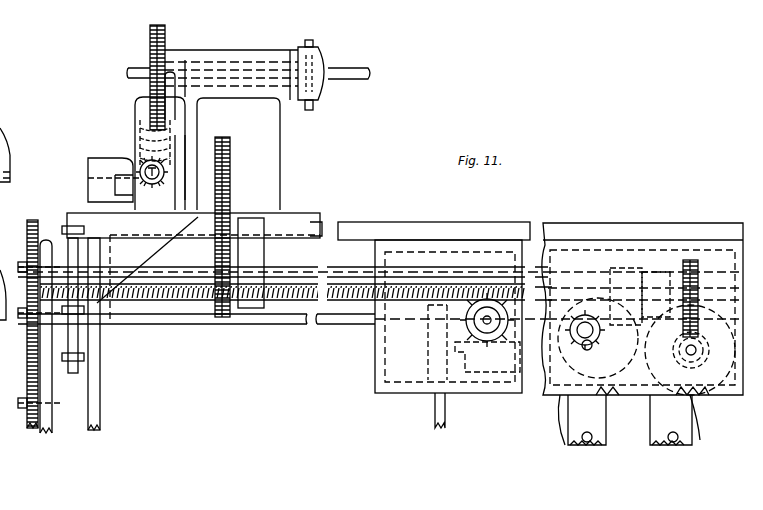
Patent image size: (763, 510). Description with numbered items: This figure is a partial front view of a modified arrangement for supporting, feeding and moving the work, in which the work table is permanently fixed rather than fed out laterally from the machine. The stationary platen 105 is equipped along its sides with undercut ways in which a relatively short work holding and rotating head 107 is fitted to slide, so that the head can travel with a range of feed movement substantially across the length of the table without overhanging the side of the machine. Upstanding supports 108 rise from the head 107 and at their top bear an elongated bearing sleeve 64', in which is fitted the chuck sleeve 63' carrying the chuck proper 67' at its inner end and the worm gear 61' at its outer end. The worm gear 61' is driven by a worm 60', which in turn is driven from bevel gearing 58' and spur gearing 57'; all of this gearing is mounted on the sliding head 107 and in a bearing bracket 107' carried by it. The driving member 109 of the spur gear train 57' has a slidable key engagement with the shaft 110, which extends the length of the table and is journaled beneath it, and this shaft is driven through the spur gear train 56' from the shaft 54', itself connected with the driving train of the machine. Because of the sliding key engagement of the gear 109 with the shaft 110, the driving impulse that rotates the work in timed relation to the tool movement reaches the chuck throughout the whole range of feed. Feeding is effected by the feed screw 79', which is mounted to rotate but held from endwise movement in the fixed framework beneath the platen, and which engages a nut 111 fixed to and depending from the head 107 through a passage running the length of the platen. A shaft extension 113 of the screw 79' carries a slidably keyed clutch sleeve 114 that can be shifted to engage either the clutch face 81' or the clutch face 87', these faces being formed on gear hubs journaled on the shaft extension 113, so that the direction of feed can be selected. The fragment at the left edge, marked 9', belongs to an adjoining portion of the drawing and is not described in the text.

The head 107 is at (20, 153).
The shaft 9' is at (5, 295).
The worm gear 61' is at (144, 77).
The chuck sleeve 63' is at (212, 53).
The bearing sleeve 64' is at (231, 64).
The chuck 67' is at (334, 67).
The upstanding supports 108 is at (280, 116).
The worm 60' is at (141, 141).
The bearing bracket 107' is at (115, 166).
The bevel gearing 58' is at (160, 172).
The shaft 54' is at (192, 321).
The spur gear train 56' is at (39, 317).
The spur gearing 57' is at (237, 227).
The driving member 109 is at (220, 318).
The nut 111 is at (252, 309).
The shaft 110 is at (298, 265).
The feed screw 79' is at (285, 325).
The stationary platen 105 is at (672, 230).
The clutch sleeve 114 is at (640, 270).
The clutch face 87' is at (598, 312).
The clutch face 81' is at (685, 284).
The shaft extension 113 is at (707, 290).